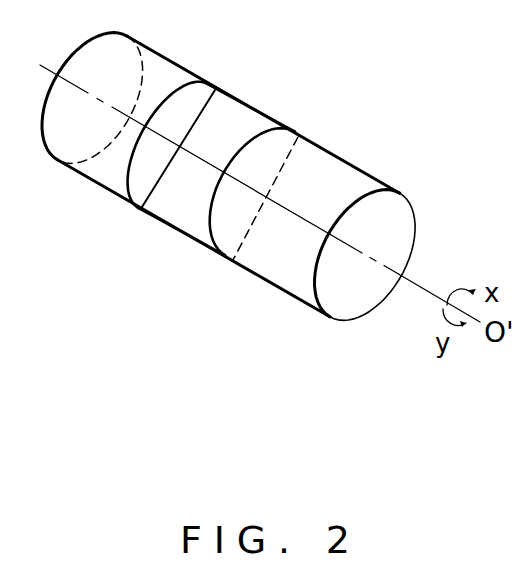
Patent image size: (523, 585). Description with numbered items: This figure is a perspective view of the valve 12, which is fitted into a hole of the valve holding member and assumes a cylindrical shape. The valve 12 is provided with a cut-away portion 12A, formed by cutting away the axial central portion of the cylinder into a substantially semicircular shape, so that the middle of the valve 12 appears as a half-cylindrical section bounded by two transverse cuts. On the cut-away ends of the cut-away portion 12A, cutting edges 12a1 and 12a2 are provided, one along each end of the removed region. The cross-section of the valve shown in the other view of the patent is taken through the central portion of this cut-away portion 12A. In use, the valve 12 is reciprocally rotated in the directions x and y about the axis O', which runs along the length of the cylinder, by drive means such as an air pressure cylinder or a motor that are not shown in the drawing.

The valve 12 is at (355, 138).
The cut-away portion 12A is at (227, 108).
The cutting edge 12a1 is at (255, 130).
The cutting edge 12a2 is at (175, 229).